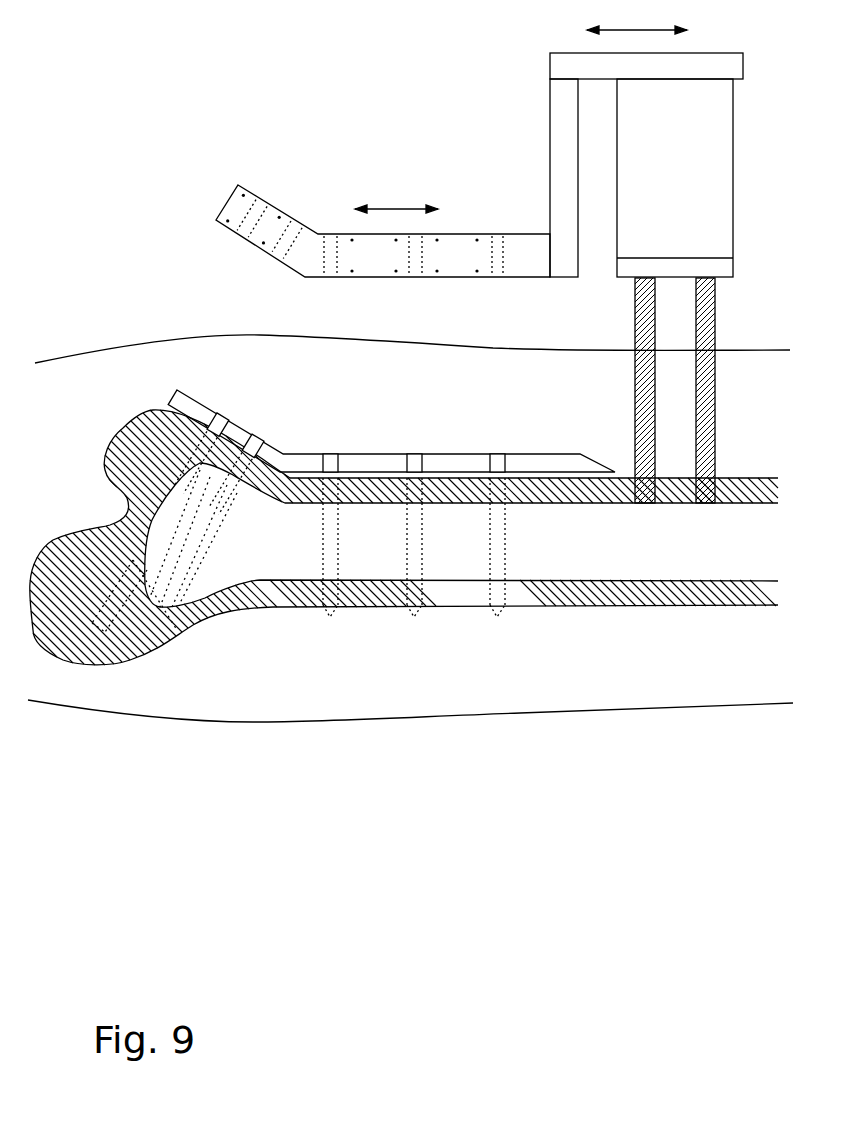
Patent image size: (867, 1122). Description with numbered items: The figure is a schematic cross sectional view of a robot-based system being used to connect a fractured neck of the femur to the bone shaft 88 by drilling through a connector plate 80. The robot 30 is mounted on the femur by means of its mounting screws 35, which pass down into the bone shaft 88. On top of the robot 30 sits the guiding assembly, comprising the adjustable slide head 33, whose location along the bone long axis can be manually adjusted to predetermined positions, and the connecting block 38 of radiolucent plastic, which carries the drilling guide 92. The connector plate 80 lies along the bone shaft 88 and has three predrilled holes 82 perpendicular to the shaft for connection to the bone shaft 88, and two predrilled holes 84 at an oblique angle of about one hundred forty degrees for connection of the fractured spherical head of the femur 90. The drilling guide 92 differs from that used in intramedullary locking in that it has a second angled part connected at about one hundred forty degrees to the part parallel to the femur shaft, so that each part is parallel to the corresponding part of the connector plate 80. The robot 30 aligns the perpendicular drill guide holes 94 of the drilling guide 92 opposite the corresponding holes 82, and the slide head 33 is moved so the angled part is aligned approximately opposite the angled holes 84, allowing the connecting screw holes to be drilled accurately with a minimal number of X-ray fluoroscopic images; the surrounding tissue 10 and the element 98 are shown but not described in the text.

The patient body 10 is at (770, 691).
The robot 30 is at (735, 178).
The adjustable slide head 33 is at (745, 63).
The mounting screws 35 is at (716, 310).
The connecting block 38 is at (550, 94).
The connector plate 80 is at (187, 388).
The predrilled holes 82 is at (332, 453).
The predrilled oblique holes 84 is at (257, 440).
The bone shaft 88 is at (578, 605).
The femur head 90 is at (153, 645).
The drilling guide 92 is at (234, 193).
The perpendicular drill guide holes 94 is at (332, 278).
The arm joint 98 is at (240, 237).